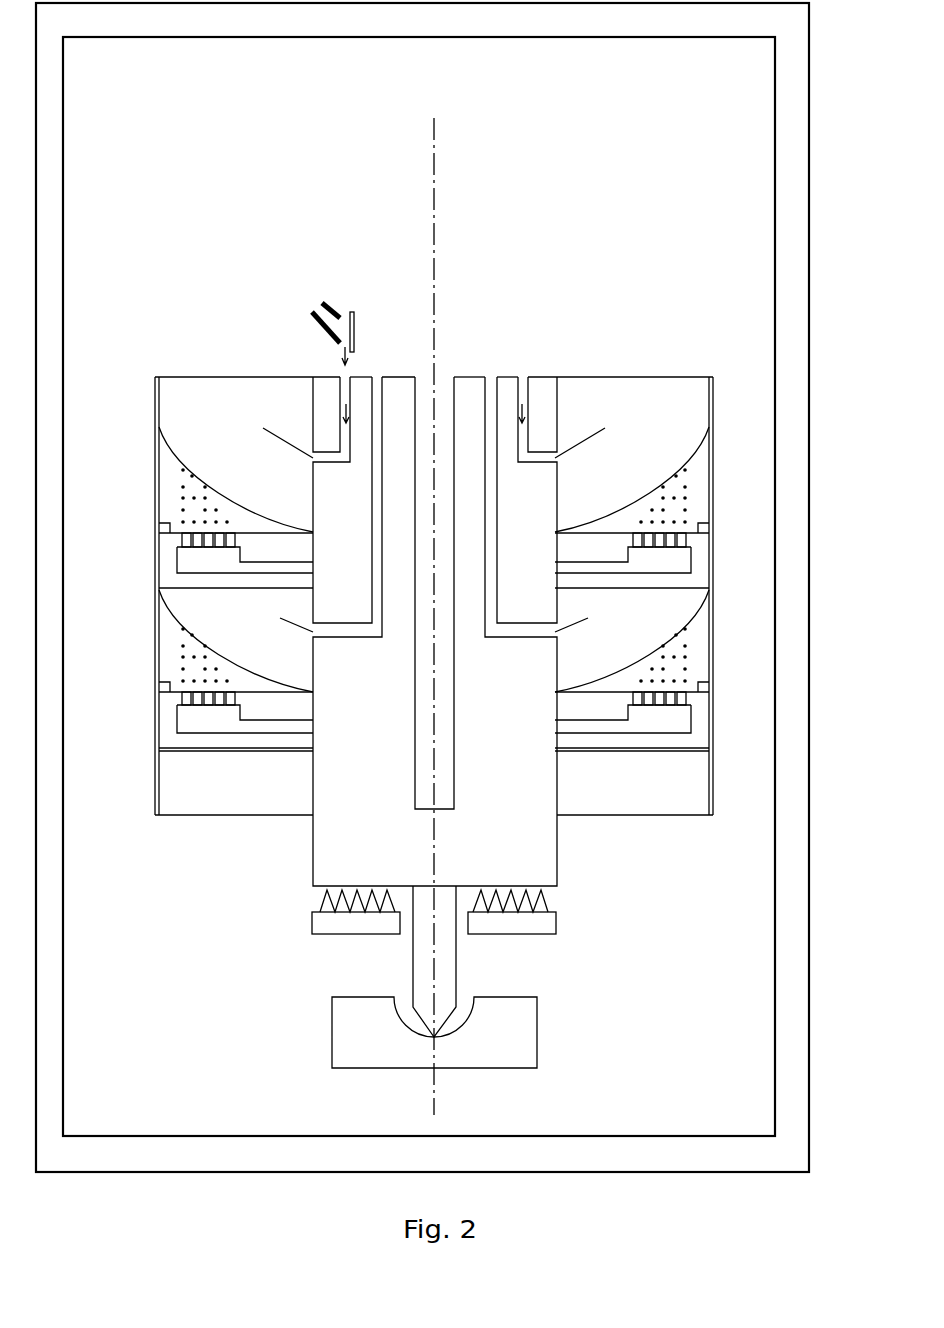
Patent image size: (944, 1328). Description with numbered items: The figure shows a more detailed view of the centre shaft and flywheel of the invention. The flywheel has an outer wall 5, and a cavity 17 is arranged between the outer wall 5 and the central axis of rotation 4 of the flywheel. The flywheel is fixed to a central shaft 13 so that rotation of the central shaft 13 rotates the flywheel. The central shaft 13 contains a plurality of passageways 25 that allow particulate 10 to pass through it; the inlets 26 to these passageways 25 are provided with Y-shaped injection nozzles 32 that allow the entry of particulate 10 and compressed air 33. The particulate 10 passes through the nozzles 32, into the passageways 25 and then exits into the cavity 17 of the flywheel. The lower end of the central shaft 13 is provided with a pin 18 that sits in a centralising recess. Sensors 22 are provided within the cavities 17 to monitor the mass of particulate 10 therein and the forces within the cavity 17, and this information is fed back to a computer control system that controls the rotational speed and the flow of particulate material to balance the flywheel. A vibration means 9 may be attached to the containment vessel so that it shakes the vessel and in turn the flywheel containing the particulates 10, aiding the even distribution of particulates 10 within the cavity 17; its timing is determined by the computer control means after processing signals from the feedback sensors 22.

The central axis of rotation 4 is at (434, 240).
The outer wall 5 is at (715, 393).
The vibration means 9 is at (323, 923).
The particulate 10 is at (317, 298).
The central shaft 13 is at (313, 860).
The cavity 17 is at (200, 410).
The pin 18 is at (457, 977).
The sensors 22 is at (167, 525).
The passageways 25 is at (373, 435).
The inlets 26 is at (343, 377).
The Y-shaped injection nozzles 32 is at (355, 327).
The compressed air 33 is at (349, 297).